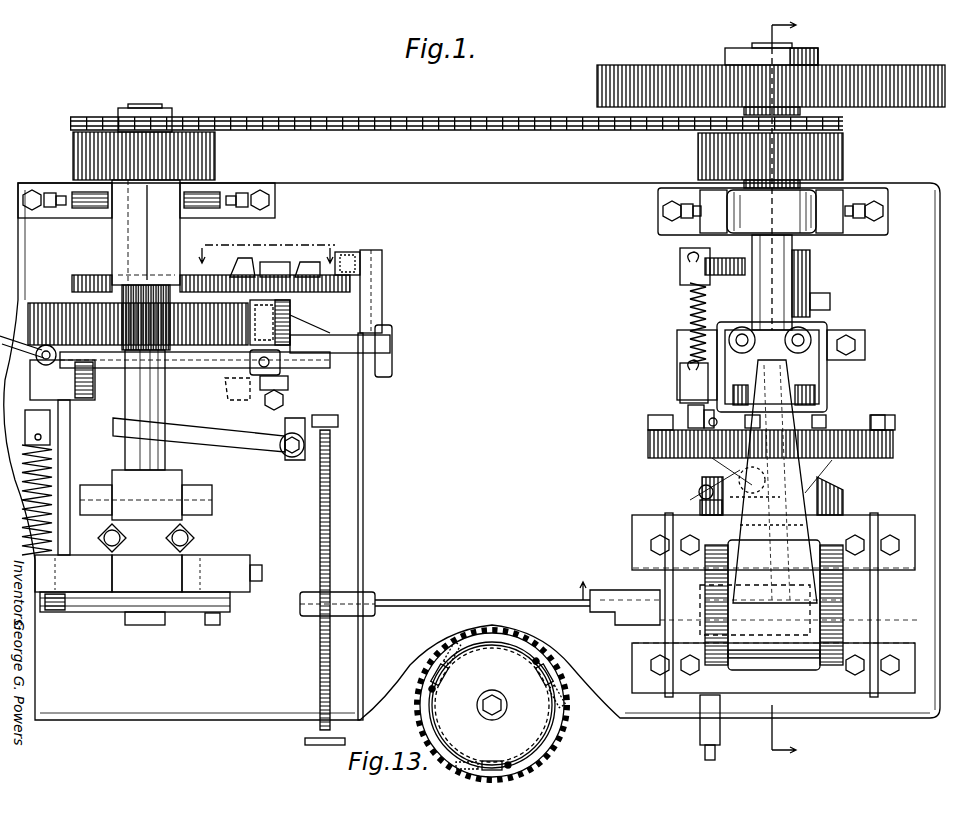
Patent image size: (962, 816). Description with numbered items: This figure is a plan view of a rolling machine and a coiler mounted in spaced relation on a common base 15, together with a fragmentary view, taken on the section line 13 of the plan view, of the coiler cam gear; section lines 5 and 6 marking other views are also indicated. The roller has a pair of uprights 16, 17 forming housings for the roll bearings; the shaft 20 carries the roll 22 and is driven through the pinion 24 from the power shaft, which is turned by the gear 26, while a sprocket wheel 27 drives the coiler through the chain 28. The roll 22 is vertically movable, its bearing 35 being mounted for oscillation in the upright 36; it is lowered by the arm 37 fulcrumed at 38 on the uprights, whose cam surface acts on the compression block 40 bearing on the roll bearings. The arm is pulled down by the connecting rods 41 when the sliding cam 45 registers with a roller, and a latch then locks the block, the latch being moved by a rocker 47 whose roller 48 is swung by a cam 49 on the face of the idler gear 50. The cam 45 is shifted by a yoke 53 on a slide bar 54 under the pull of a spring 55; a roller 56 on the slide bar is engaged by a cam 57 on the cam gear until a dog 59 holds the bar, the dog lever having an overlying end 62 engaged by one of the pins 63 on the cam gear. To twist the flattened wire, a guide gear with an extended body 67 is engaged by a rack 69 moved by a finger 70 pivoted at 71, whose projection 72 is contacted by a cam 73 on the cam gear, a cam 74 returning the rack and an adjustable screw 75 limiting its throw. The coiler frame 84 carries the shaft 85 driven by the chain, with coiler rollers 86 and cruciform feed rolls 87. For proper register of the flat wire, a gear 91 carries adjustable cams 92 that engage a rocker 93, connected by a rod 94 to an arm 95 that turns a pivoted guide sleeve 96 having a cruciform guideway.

In FIG. 1, the section line 5- 5 is at (781, 390).
In FIG. 1, the section line 6- 6 is at (573, 595).
In FIG. 1, the section line 13- 13 is at (266, 247).
In FIG. 1, the base 15 is at (472, 451).
In FIG. 1, the upright 16 is at (898, 643).
In FIG. 1, the upright 17 is at (632, 530).
In FIG. 1, the shaft 20 is at (812, 278).
In FIG. 1, the roll 22 is at (860, 605).
In FIG. 1, the pinion 24 is at (845, 157).
In FIG. 1, the gear 26 is at (895, 65).
In FIG. 1, the sprocket wheel 27 is at (845, 123).
In FIG. 1, the chain 28 is at (478, 117).
In FIG. 1, the bearing 35 is at (771, 211).
In FIG. 1, the upright 36 is at (828, 230).
In FIG. 1, the arm 37 is at (774, 605).
In FIG. 1, the fulcrum 38 is at (832, 636).
In FIG. 1, the compression block 40 is at (818, 545).
In FIG. 1, the connecting rods 41 is at (771, 367).
In FIG. 1, the cam 45 is at (832, 300).
In FIG. 1, the rocker 47 is at (740, 385).
In FIG. 1, the roller 48 is at (812, 388).
In FIG. 1, the cam 49 is at (662, 415).
In FIG. 1, the idler gear 50 is at (648, 441).
In FIG. 1, the yoke 53 is at (712, 262).
In FIG. 1, the slide bar 54 is at (682, 244).
In FIG. 1, the spring 55 is at (688, 303).
In FIG. 1, the roller 56 is at (690, 412).
In FIG. 1, the cam 57 is at (747, 407).
In FIG. 1, the dog 59 is at (703, 413).
In FIG. 1, the overlying end 62 is at (712, 426).
In FIG. 1, the pins 63 is at (826, 418).
In FIG. 1, the extended body 67 is at (641, 598).
In FIG. 1, the rack 69 is at (755, 610).
In FIG. 1, the finger 70 is at (722, 478).
In FIG. 1, the pivot 71 is at (720, 509).
In FIG. 1, the projection 72 is at (772, 527).
In FIG. 1, the cam 73 is at (763, 482).
In FIG. 1, the cam 74 is at (843, 470).
In FIG. 1, the adjustable screw 75 is at (720, 718).
In FIG. 1, the frame 84 is at (200, 555).
In FIG. 1, the shaft 85 is at (165, 398).
In FIG. 1, the coiler rollers 86 is at (70, 613).
In FIG. 1, the feed roll 87 is at (148, 625).
In FIG. 1, the gear 91 is at (228, 262).
In FIG. 13, the gear 91 is at (568, 716).
In FIG. 1, the cams 92 is at (262, 262).
In FIG. 13, the cams 92 is at (478, 650).
In FIG. 1, the rocker 93 is at (348, 252).
In FIG. 1, the rod 94 is at (363, 452).
In FIG. 1, the arm 95 is at (372, 596).
In FIG. 1, the guide sleeve 96 is at (338, 592).